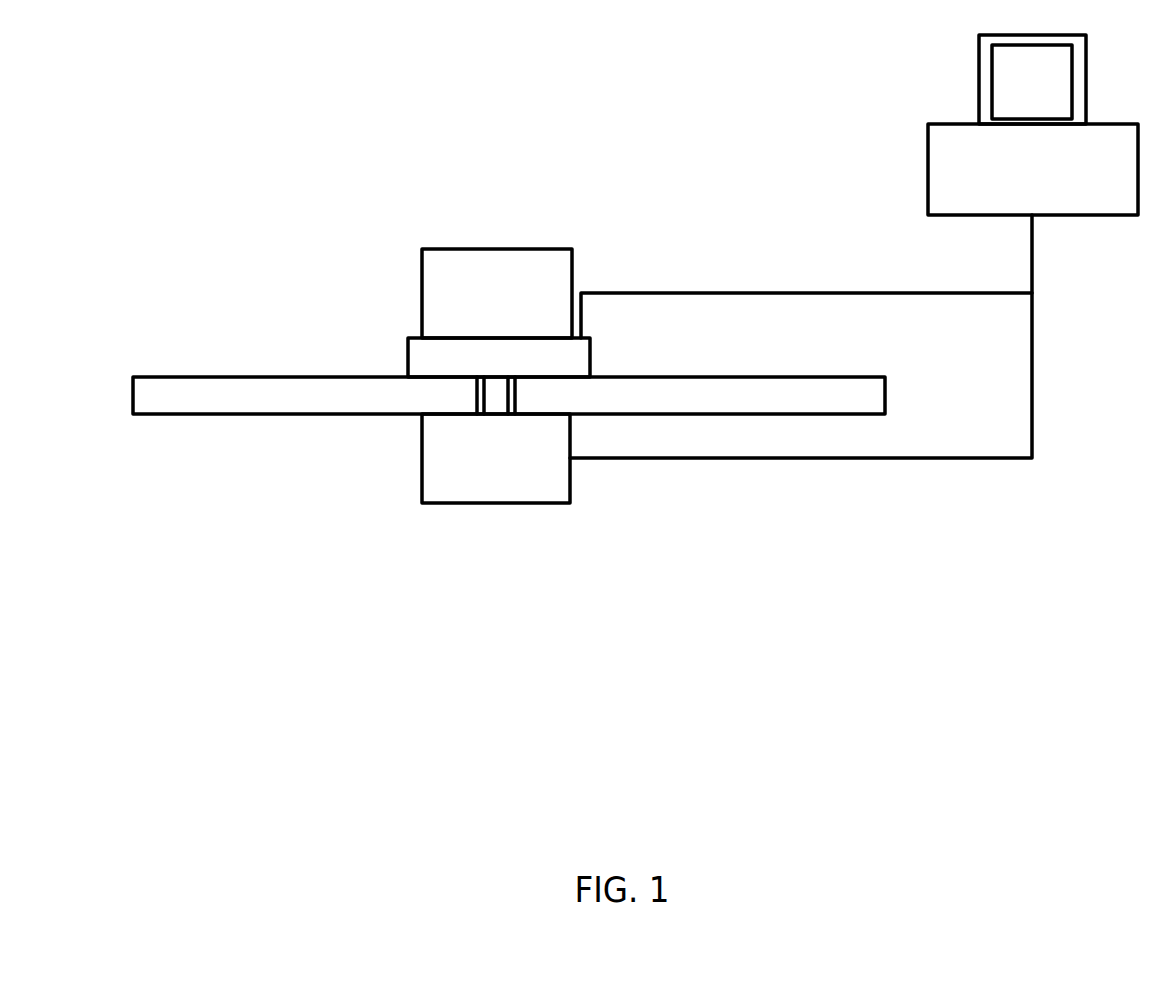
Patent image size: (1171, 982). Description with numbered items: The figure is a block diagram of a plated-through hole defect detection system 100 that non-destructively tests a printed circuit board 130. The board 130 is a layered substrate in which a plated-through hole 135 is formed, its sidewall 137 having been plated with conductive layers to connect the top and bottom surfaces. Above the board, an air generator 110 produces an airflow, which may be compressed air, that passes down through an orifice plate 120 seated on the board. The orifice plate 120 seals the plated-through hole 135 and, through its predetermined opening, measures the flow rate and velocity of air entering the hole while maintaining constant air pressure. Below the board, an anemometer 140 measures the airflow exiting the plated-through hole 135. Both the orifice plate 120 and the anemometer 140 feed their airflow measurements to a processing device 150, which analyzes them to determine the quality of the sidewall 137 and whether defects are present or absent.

The plated-through hole defect detection system 100 is at (363, 72).
The air generator 110 is at (500, 249).
The orifice plate 120 is at (592, 348).
The printed circuit board 130 is at (268, 416).
The plated-through hole 135 is at (495, 430).
The sidewall 137 is at (462, 394).
The anemometer 140 is at (493, 503).
The processing device 150 is at (928, 172).